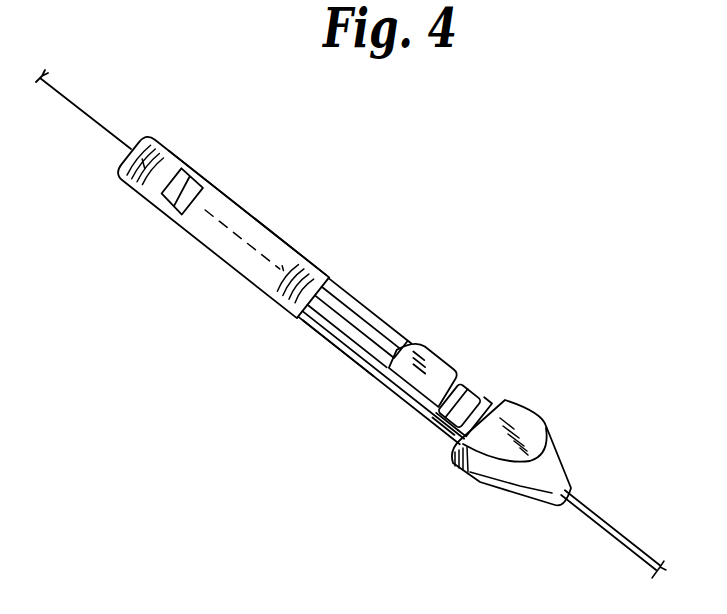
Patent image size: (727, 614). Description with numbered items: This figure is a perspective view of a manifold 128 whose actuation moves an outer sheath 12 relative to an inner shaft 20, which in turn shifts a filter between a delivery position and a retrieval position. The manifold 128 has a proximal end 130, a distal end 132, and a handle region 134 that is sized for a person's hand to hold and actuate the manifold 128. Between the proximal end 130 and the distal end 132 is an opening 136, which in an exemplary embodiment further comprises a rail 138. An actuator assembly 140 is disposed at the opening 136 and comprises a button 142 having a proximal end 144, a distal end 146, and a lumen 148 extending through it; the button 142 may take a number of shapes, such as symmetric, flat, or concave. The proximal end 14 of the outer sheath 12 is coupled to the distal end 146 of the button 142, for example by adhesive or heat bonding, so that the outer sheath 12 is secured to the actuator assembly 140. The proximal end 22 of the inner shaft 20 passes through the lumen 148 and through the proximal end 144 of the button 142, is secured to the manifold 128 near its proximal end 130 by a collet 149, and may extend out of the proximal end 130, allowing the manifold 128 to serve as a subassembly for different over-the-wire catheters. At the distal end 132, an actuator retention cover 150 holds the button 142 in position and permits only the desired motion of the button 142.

The outer sheath 12 is at (625, 549).
The proximal end of outer sheath 14 is at (448, 465).
The inner shaft 20 is at (355, 366).
The proximal end of inner shaft 22 is at (96, 118).
The manifold 128 is at (248, 207).
The proximal end of manifold 130 is at (143, 137).
The distal end of manifold 132 is at (542, 428).
The handle region 134 is at (223, 238).
The opening 136 is at (362, 323).
The rail 138 is at (398, 360).
The actuator assembly 140 is at (462, 381).
The button 142 is at (405, 362).
The proximal end of button 144 is at (380, 363).
The distal end of button 146 is at (447, 412).
The lumen 148 is at (476, 401).
The collet 149 is at (197, 170).
The actuator retention cover 150 is at (550, 460).